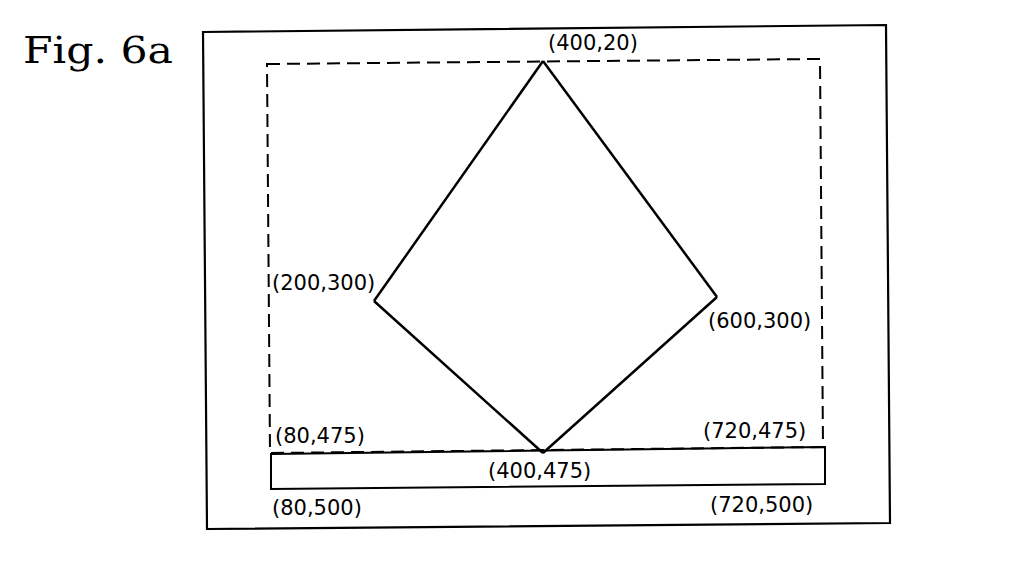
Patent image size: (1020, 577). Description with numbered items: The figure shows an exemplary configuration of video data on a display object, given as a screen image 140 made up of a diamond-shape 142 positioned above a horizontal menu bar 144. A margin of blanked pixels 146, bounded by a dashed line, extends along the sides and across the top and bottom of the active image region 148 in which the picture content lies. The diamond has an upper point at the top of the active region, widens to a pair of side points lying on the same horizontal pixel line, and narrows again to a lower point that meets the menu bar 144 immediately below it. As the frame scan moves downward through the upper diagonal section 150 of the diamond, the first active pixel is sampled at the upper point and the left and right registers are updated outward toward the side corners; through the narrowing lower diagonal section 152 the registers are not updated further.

The screen image 140 is at (548, 257).
The diamond-shape 142 is at (656, 205).
The horizontal menu bar 144 is at (648, 447).
The margin of blanked pixels 146 is at (465, 57).
The active image region 148 is at (357, 117).
The upper diagonal section 150 is at (555, 181).
The lower diagonal section 152 is at (435, 358).